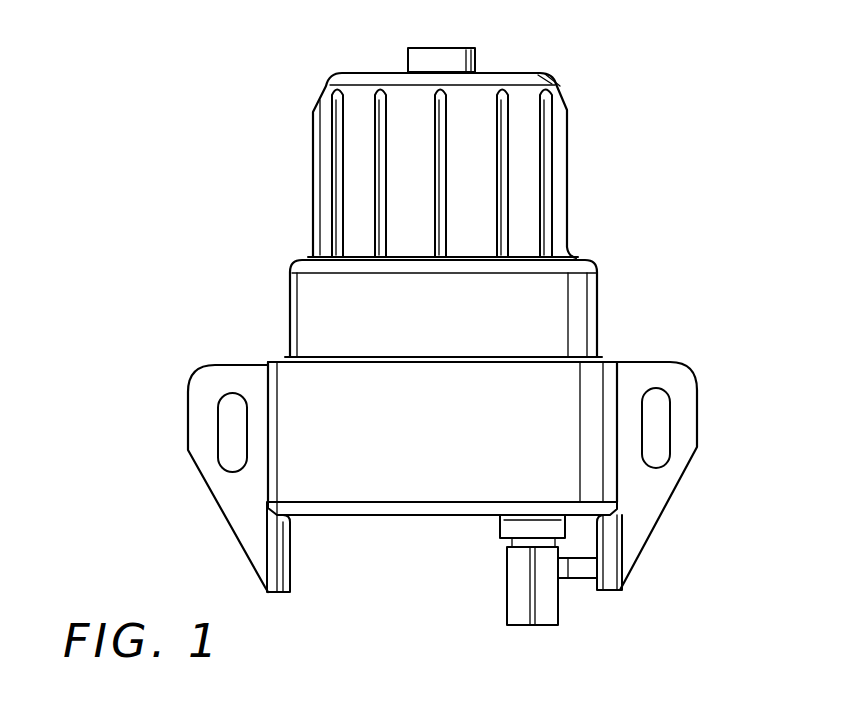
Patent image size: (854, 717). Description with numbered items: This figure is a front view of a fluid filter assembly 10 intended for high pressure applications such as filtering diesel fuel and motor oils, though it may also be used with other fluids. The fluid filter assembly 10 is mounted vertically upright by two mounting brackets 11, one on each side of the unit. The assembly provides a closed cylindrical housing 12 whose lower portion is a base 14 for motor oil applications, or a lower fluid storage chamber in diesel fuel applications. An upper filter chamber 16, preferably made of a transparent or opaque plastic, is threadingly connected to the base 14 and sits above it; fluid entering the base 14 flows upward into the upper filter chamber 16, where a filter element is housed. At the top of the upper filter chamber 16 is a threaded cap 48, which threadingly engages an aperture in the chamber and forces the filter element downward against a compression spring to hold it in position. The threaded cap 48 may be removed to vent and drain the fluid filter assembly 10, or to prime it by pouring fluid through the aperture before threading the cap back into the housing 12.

The fluid filter assembly 10 is at (217, 209).
The mounting bracket 11 is at (220, 375).
The closed cylindrical housing 12 is at (593, 328).
The base 14 is at (377, 517).
The upper filter chamber 16 is at (568, 222).
The threaded cap 48 is at (470, 53).